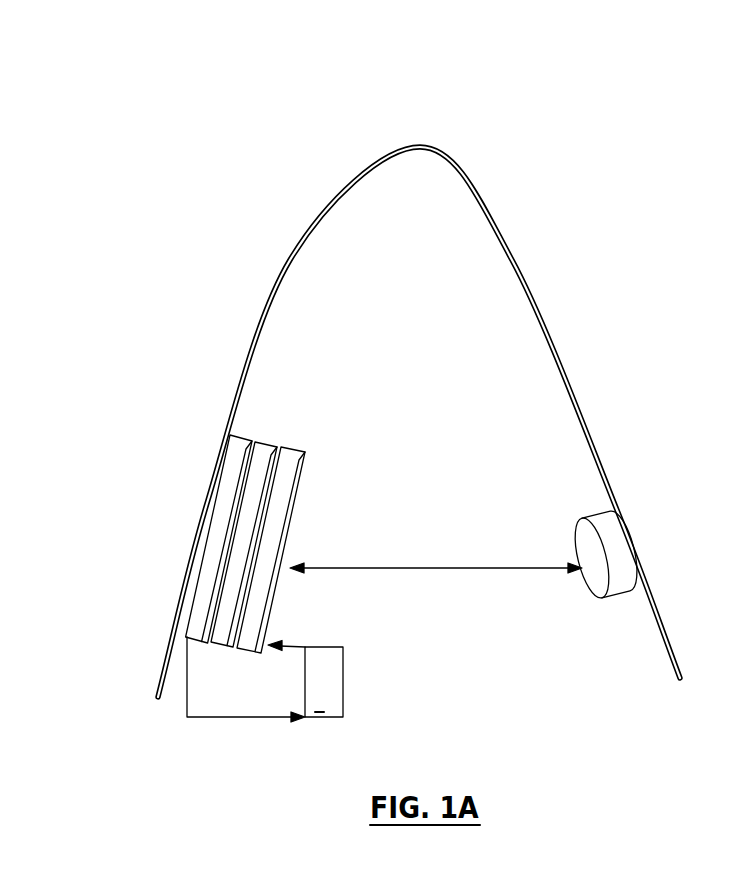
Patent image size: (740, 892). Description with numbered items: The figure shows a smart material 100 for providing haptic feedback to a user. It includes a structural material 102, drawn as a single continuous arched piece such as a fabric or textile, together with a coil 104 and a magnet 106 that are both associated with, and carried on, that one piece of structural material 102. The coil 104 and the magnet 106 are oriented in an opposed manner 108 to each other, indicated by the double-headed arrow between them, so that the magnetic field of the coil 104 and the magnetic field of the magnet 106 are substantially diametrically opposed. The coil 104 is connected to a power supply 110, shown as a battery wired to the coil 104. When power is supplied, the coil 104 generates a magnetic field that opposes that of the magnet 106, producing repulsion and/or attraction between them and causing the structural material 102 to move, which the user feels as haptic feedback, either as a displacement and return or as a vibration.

The smart material 100 is at (242, 225).
The structural material 102 is at (502, 225).
The coil 104 is at (293, 448).
The magnet 106 is at (615, 538).
The opposed manner 108 is at (436, 553).
The power supply 110 is at (343, 681).